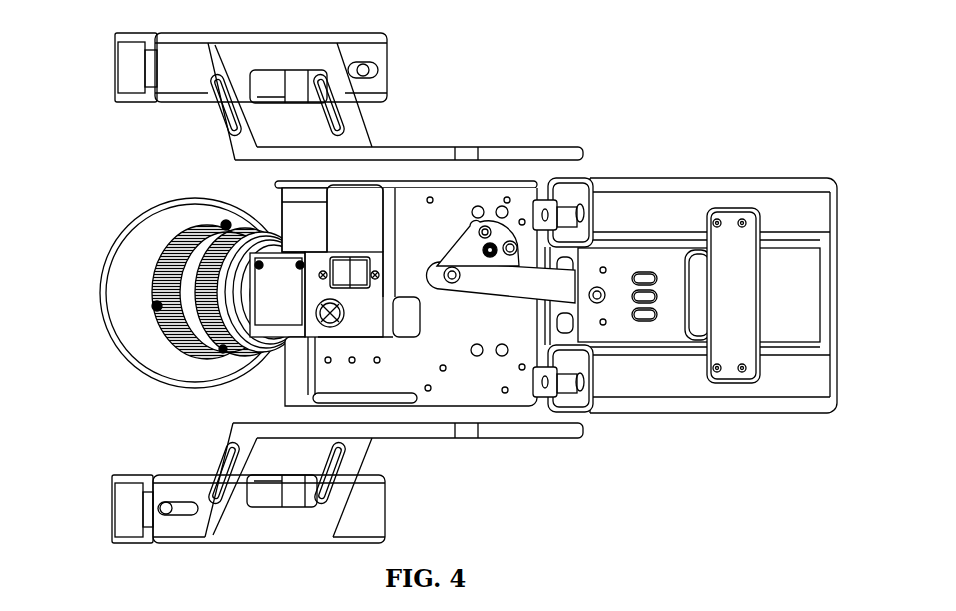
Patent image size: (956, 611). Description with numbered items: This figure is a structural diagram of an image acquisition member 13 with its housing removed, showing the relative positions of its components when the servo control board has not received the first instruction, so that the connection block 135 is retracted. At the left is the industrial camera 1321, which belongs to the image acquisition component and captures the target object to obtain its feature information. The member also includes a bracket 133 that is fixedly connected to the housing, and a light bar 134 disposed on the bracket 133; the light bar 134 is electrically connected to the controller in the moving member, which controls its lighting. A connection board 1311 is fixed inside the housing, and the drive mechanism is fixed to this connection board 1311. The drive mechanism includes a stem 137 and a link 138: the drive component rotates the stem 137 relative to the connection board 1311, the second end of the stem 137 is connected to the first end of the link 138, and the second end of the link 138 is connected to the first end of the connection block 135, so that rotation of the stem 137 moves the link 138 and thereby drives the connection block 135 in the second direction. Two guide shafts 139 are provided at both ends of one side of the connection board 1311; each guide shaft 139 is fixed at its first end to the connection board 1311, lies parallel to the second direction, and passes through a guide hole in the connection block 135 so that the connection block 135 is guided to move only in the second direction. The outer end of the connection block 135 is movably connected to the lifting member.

The image acquisition member 13 is at (565, 98).
The bracket 133 is at (373, 146).
The light bar 134 is at (124, 62).
The connection block 135 is at (673, 187).
The stem 137 is at (468, 247).
The link 138 is at (487, 283).
The guide shaft 139 is at (586, 185).
The connection board 1311 is at (340, 376).
The industrial camera 1321 is at (140, 248).